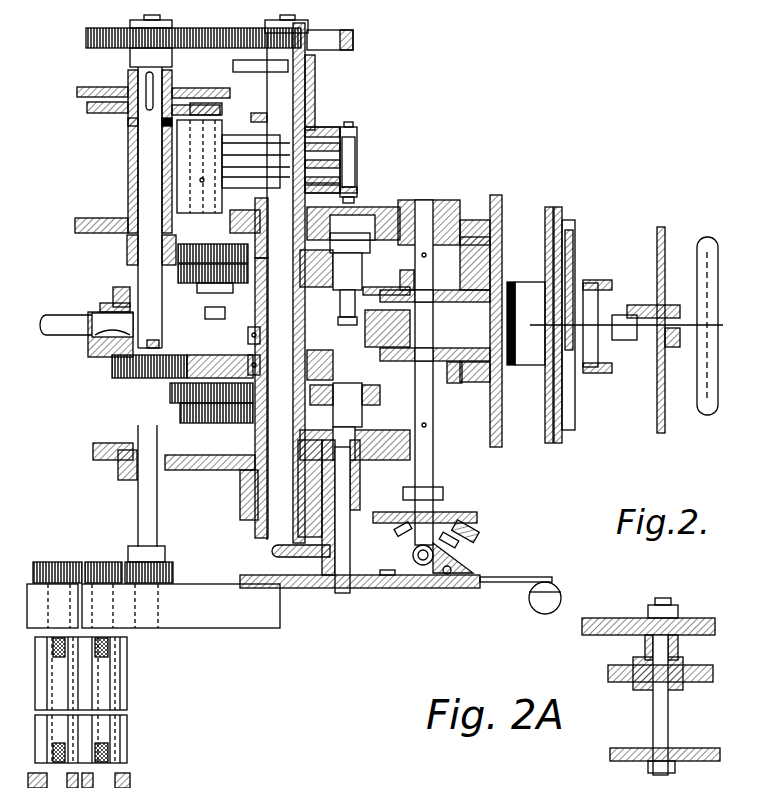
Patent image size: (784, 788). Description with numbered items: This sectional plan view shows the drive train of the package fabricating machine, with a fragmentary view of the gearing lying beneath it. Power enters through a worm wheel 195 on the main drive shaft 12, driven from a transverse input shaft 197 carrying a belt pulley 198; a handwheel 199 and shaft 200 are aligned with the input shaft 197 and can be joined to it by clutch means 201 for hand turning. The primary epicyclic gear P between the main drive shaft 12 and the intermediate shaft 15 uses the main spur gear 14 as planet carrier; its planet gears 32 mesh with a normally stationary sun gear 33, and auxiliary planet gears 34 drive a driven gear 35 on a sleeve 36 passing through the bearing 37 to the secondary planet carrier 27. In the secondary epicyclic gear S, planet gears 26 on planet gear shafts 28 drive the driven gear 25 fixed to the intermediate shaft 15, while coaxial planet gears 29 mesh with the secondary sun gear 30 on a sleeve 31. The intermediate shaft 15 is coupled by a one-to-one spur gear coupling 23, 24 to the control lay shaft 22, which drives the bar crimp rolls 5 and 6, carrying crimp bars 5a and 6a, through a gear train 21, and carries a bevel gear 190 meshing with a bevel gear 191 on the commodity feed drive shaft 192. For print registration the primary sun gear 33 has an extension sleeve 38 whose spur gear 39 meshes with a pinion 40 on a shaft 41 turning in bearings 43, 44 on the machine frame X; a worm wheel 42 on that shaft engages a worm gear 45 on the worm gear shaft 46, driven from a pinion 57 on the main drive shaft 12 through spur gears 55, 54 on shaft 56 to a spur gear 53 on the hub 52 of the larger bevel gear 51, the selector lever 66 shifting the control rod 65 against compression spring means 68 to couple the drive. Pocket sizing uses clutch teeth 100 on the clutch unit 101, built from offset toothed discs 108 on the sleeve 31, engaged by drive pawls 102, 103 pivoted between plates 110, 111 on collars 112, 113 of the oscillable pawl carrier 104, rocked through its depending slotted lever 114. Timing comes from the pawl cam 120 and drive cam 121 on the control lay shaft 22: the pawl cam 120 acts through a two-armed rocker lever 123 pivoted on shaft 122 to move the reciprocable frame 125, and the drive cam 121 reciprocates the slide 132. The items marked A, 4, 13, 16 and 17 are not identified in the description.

In FIG. 2, the spur gear coupling gear 23 is at (106, 29).
In FIG. 2, the spur gear coupling gear 24 is at (268, 31).
In FIG. 2, the control lay shaft 22 is at (150, 221).
In FIG. 2, the drive cam 121 is at (100, 88).
In FIG. 2, the pawl cam 120 is at (87, 107).
In FIG. 2, the reciprocating slide 132 is at (128, 122).
In FIG. 2, the clutch teeth 100 is at (240, 147).
In FIG. 2, the two-armed rocker lever 123 is at (213, 148).
In FIG. 2, the clutch unit 101 is at (220, 155).
In FIG. 2, the toothed discs 108 is at (240, 178).
In FIG. 2, the reciprocable frame 125 is at (247, 205).
In FIG. 2, the shaft 122 is at (205, 103).
In FIG. 2, the depending slotted lever 114 is at (245, 62).
In FIG. 2, the intermediate shaft 15 is at (232, 522).
In FIG. 2, the driven gear 25 is at (273, 286).
In FIG. 2, the sleeve 31 is at (305, 214).
In FIG. 2, the collar means 112 is at (306, 83).
In FIG. 2, the semi-rotary pawl carrier 104 is at (323, 127).
In FIG. 2, the plate 110 is at (322, 127).
In FIG. 2, the drive pawl 102 is at (355, 130).
In FIG. 2, the drive pawl 103 is at (357, 167).
In FIG. 2, the plate 111 is at (357, 183).
In FIG. 2, the collar means 113 is at (357, 193).
In FIG. 2, the secondary sun gear 30 is at (338, 240).
In FIG. 2, the secondary epicyclic gear S is at (360, 240).
In FIG. 2, the main drive shaft 12 is at (427, 227).
In FIG. 2, the planet gears 29 is at (173, 249).
In FIG. 2, the planet gears 26 is at (170, 266).
In FIG. 2, the secondary planet carrier 27 is at (208, 293).
In FIG. 2, the bevel gear 190 is at (123, 293).
In FIG. 2, the commodity feed main drive shaft 192 is at (60, 327).
In FIG. 2, the bevel gear 191 is at (100, 348).
In FIG. 2, the gear 16 is at (147, 370).
In FIG. 2, the gear 17 is at (157, 367).
In FIG. 2, the auxiliary planet gears 34 is at (173, 393).
In FIG. 2, the planet gear shafts 28 is at (355, 287).
In FIG. 2, the sleeve 36 is at (260, 330).
In FIG. 2, the bearing 37 is at (271, 361).
In FIG. 2, the driven gear 35 is at (341, 362).
In FIG. 2, the extension sleeve 38 is at (297, 482).
In FIG. 2, the bearing 43 is at (320, 463).
In FIG. 2, the main machine frame X is at (345, 470).
In FIG. 2, the primary epicyclic gear P is at (362, 435).
In FIG. 2, the planet gears 32 is at (383, 417).
In FIG. 2, the housing 13 is at (495, 373).
In FIG. 2, the worm wheel 195 is at (480, 315).
In FIG. 2, the transverse input shaft 197 is at (493, 331).
In FIG. 2, the pulley 198 is at (562, 212).
In FIG. 2, the handwheel shaft 200 is at (637, 310).
In FIG. 2, the clutch means 201 is at (627, 362).
In FIG. 2, the handwheel 199 is at (698, 410).
In FIG. 2, the primary sun gear 33 is at (235, 465).
In FIG. 2, the spur gear 39 is at (248, 500).
In FIG. 2, the pinion 40 is at (358, 491).
In FIG. 2, the worm wheel shaft 41 is at (343, 593).
In FIG. 2, the worm wheel 42 is at (272, 548).
In FIG. 2, the bearing 44 is at (333, 588).
In FIG. 2, the compression spring means 68 is at (387, 577).
In FIG. 2, the worm gear shaft 46 is at (423, 556).
In FIG. 2, the control rod 65 is at (448, 572).
In FIG. 2, the worm gear 45 is at (440, 556).
In FIG. 2, the pinion 57 is at (440, 512).
In FIG. 2, the hub 52 is at (470, 512).
In FIG. 2, the spur gear 53 is at (478, 522).
In FIG. 2, the larger bevel gear 51 is at (478, 541).
In FIG. 2, the selector lever 66 is at (517, 578).
In FIG. 2, the direction A is at (342, 660).
In FIG. 2, the gear train 21 is at (115, 562).
In FIG. 2, the bar crimp roll 5 is at (57, 695).
In FIG. 2, the crimp bars 5a is at (57, 656).
In FIG. 2, the bar crimp roll 6 is at (137, 756).
In FIG. 2, the crimp bars 6a is at (102, 740).
In FIG. 2, the frame 4 is at (303, 779).
In FIG. 2, the main spur gear 14 is at (428, 779).
In FIG. 2A, the spur gear 54 is at (685, 688).
In FIG. 2A, the spur gear 55 is at (608, 671).
In FIG. 2A, the shaft 56 is at (660, 720).